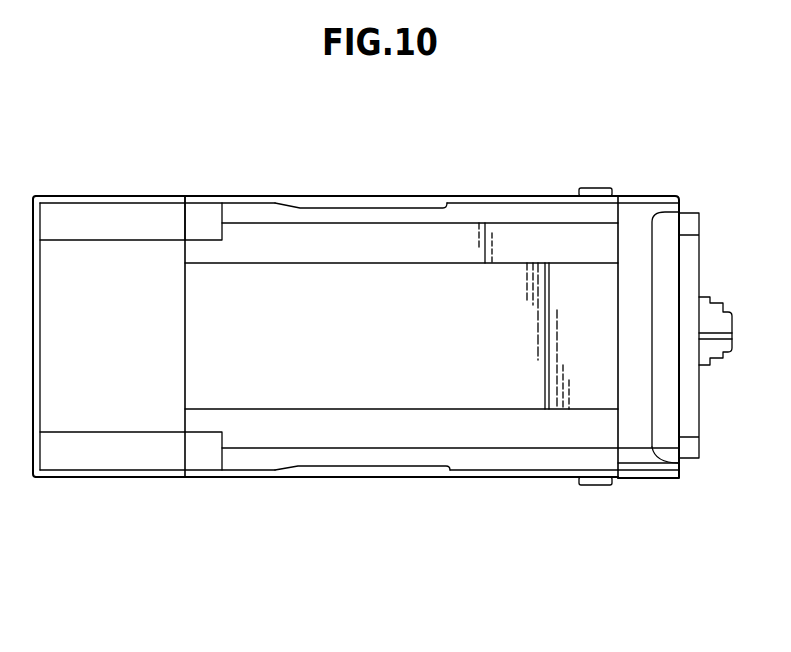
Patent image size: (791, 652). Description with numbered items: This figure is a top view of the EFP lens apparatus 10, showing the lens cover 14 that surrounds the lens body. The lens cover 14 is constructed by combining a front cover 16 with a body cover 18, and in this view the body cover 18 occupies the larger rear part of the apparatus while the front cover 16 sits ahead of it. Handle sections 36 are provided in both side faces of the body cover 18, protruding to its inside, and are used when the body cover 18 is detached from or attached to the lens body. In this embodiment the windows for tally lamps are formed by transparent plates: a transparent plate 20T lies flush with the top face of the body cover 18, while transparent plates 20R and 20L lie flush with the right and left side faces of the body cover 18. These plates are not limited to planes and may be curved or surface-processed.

The EFP lens apparatus 10 is at (543, 183).
The lens cover 14 is at (303, 558).
The front cover 16 is at (131, 403).
The body cover 18 is at (272, 395).
The transparent plate 20L is at (197, 195).
The transparent plate 20R is at (204, 478).
The transparent plate 20T is at (208, 215).
The handle section 36 is at (418, 207).